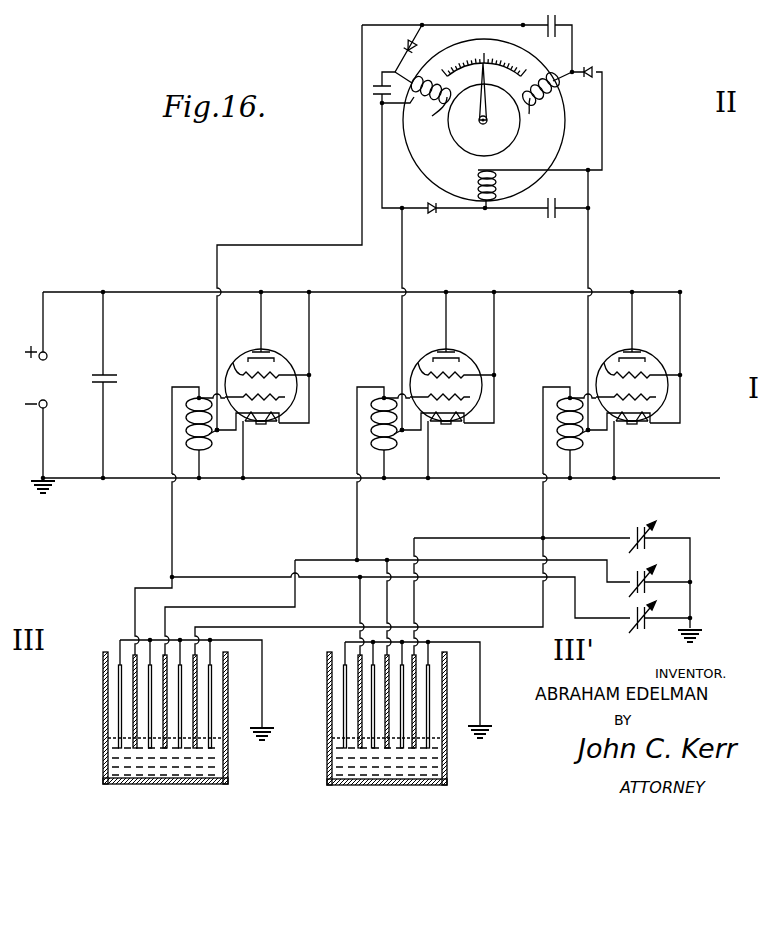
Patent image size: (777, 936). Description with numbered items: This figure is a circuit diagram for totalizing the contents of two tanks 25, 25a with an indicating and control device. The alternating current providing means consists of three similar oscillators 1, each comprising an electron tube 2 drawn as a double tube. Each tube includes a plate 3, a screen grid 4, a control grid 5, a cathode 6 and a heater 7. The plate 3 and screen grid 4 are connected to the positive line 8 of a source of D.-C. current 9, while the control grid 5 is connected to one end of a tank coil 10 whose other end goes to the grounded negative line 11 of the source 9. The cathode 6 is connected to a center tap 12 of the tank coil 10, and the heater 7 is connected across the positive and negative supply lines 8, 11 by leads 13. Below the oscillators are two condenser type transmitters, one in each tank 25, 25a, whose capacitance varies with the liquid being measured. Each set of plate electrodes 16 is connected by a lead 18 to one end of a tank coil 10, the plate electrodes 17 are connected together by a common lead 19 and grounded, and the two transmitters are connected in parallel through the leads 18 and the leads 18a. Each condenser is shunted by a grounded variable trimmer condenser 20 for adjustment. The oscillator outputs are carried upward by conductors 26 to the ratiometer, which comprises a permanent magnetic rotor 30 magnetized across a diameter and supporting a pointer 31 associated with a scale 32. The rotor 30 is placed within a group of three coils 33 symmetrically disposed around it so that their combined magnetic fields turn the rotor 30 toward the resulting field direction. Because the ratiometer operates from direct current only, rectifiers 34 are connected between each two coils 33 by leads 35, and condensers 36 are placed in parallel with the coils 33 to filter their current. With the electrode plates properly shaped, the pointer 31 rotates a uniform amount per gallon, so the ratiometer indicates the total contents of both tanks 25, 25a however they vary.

The oscillator 1 is at (253, 450).
The electron tube 2 is at (271, 343).
The plate 3 is at (249, 321).
The screen grid 4 is at (265, 360).
The control grid 5 is at (279, 385).
The cathode 6 is at (274, 411).
The heater 7 is at (266, 429).
The positive line 8 is at (142, 295).
The source of D.-C. current 9 is at (40, 383).
The tank coil 10 is at (175, 433).
The grounded negative line 11 is at (75, 478).
The center tap 12 is at (220, 451).
The lead 13 is at (317, 356).
The plate electrode 16 is at (92, 694).
The plate electrode 17 is at (132, 710).
The lead 18 is at (382, 564).
The lead 18a is at (337, 615).
The common lead 19 is at (262, 677).
The variable trimmer condenser 20 is at (653, 626).
The tank 25 is at (103, 757).
The tank 25a is at (447, 758).
The conductor to indicator 26 is at (267, 228).
The permanent magnetic rotor 30 is at (500, 140).
The pointer 31 is at (477, 118).
The scale 32 is at (462, 60).
The coil 33 is at (546, 102).
The rectifier 34 is at (405, 44).
The lead 35 is at (455, 13).
The condenser 36 is at (376, 83).